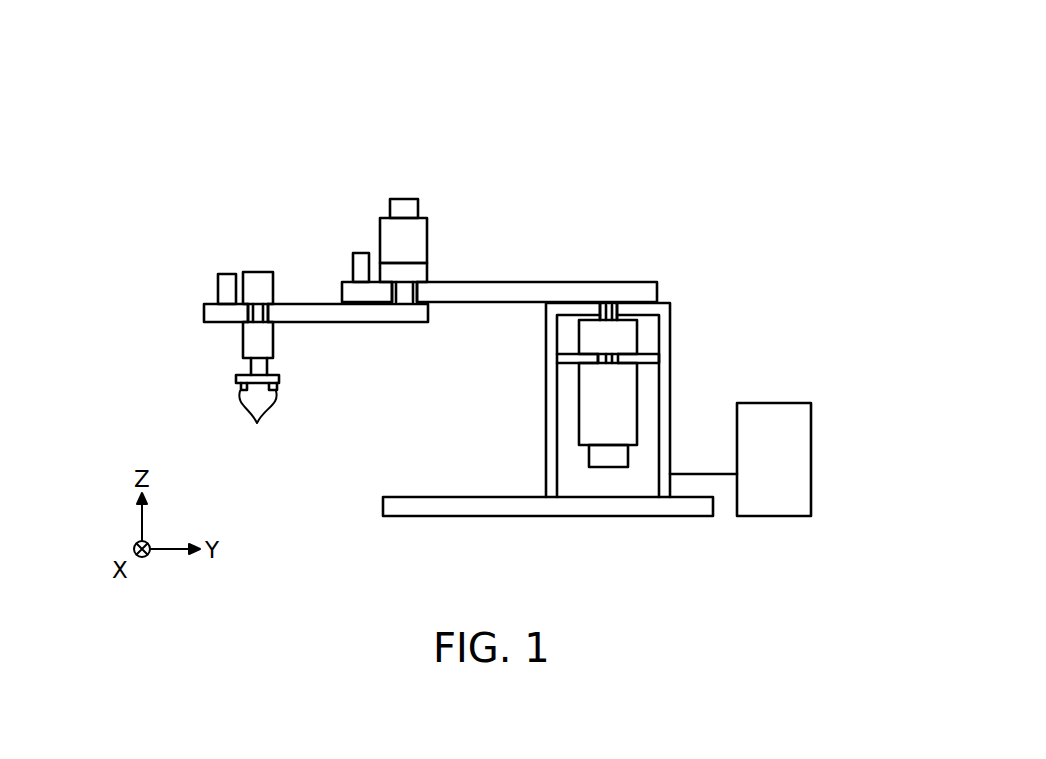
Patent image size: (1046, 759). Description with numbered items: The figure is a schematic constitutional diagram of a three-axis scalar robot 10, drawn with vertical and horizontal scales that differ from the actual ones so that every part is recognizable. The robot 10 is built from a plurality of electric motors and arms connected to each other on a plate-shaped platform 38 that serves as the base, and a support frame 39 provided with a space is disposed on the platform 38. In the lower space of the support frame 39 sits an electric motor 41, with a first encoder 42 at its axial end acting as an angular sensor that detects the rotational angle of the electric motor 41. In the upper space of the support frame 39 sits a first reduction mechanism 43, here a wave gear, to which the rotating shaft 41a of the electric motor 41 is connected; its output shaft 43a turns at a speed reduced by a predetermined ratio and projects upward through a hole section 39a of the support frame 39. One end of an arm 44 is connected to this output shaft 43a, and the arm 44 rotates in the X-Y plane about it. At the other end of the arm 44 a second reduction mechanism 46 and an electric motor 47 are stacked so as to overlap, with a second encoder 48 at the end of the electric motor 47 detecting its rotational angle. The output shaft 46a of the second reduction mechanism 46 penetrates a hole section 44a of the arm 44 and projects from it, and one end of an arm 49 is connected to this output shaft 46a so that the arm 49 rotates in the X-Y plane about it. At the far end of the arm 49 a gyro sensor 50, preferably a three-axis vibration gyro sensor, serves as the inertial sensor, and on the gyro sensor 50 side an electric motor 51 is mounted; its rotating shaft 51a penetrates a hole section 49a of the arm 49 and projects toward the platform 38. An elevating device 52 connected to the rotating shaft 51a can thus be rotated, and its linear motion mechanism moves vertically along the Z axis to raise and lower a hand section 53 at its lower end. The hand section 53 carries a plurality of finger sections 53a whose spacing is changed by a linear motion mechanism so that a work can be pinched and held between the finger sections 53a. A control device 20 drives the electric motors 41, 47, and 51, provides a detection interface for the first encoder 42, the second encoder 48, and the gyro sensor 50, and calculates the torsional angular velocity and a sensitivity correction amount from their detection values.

The robot 10 is at (721, 231).
The control device 20 is at (797, 458).
The platform 38 is at (466, 497).
The support frame 39 is at (662, 310).
The hole section 39a is at (610, 303).
The electric motor 41 is at (627, 402).
The rotating shaft 41a is at (608, 358).
The first encoder 42 is at (620, 459).
The first reduction mechanism 43 is at (640, 333).
The output shaft 43a is at (605, 307).
The arm 44 is at (528, 292).
The hole section 44a is at (418, 303).
The second reduction mechanism 46 is at (424, 274).
The output shaft 46a is at (404, 296).
The electric motor 47 is at (417, 233).
The second encoder 48 is at (403, 208).
The arm 49 is at (322, 315).
The hole section 49a is at (258, 308).
The gyro sensor 50 is at (227, 275).
The electric motor 51 is at (260, 280).
The rotating shaft 51a is at (245, 318).
The elevating device 52 is at (249, 345).
The hand section 53 is at (236, 378).
The finger sections 53a is at (259, 424).